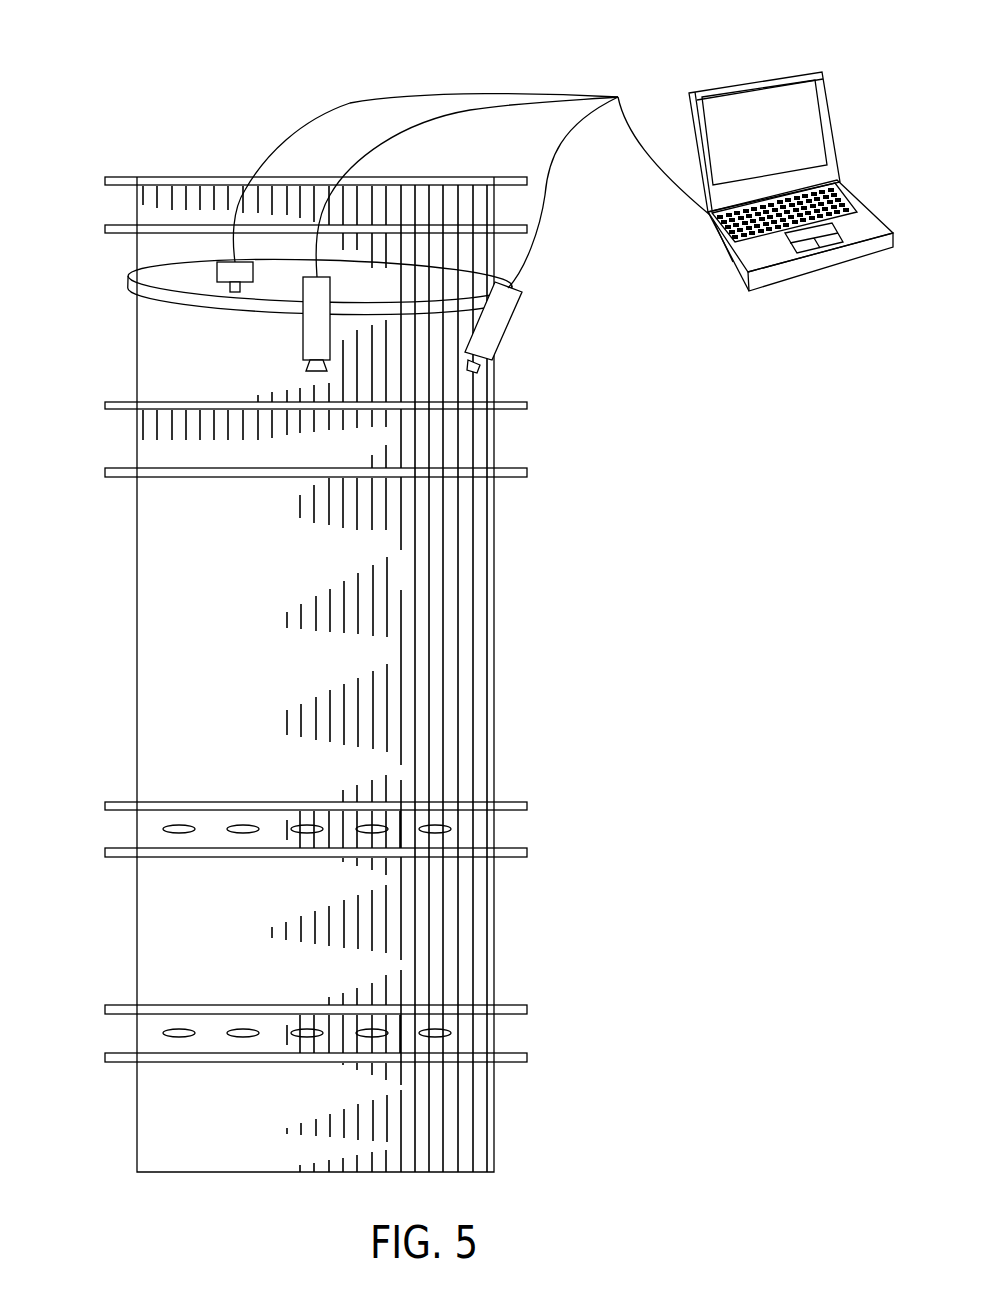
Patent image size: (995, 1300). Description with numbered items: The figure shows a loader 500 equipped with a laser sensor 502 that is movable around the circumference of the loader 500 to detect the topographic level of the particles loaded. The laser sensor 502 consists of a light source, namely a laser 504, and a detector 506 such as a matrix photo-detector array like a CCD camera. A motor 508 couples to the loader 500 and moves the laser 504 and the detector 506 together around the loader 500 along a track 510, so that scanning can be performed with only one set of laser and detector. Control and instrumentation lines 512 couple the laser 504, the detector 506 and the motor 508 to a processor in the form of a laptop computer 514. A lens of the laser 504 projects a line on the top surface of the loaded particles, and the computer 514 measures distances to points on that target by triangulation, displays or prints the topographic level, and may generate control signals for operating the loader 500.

The loader 500 is at (577, 741).
The laser sensor 502 is at (346, 310).
The laser 504 is at (302, 340).
The detector 506 is at (498, 342).
The motor 508 is at (217, 273).
The track 510 is at (167, 298).
The control and instrumentation lines 512 is at (536, 92).
The laptop computer 514 is at (831, 265).